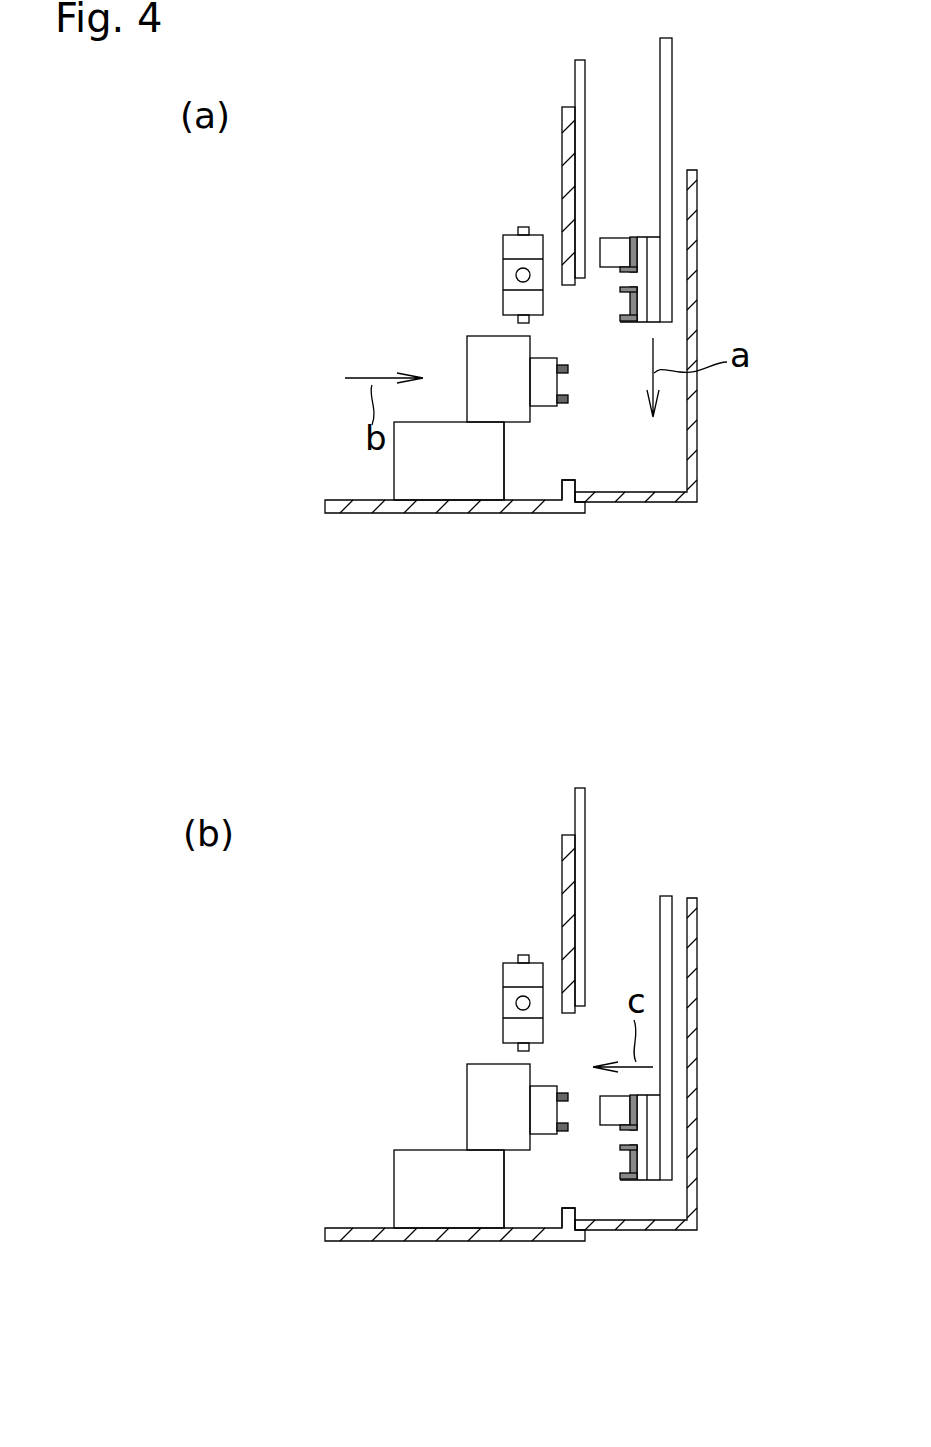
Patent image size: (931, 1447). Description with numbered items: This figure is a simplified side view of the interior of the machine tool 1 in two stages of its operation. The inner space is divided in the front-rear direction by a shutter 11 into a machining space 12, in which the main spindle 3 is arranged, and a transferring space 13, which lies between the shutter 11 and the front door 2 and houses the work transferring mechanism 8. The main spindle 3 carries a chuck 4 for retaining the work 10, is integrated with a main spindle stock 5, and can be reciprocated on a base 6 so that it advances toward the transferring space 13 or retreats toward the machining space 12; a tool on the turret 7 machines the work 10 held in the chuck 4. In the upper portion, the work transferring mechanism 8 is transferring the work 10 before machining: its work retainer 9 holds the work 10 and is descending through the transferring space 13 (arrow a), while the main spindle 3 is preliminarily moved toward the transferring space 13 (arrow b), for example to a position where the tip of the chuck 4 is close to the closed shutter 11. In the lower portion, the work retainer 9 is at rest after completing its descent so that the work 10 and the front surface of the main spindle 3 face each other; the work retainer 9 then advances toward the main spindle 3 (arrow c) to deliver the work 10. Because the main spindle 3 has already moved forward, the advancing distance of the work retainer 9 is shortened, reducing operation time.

The machine tool 1 is at (437, 563).
The front door 2 is at (697, 318).
The main spindle 3 is at (547, 410).
The chuck 4 is at (567, 400).
The main spindle stock 5 is at (467, 345).
The base 6 is at (393, 480).
The turret 7 is at (503, 277).
The work transferring mechanism 8 is at (673, 118).
The work retainer 9 is at (620, 323).
The work 10 is at (615, 237).
The shutter 11 is at (575, 80).
The machining space 12 is at (433, 319).
The transferring space 13 is at (672, 427).